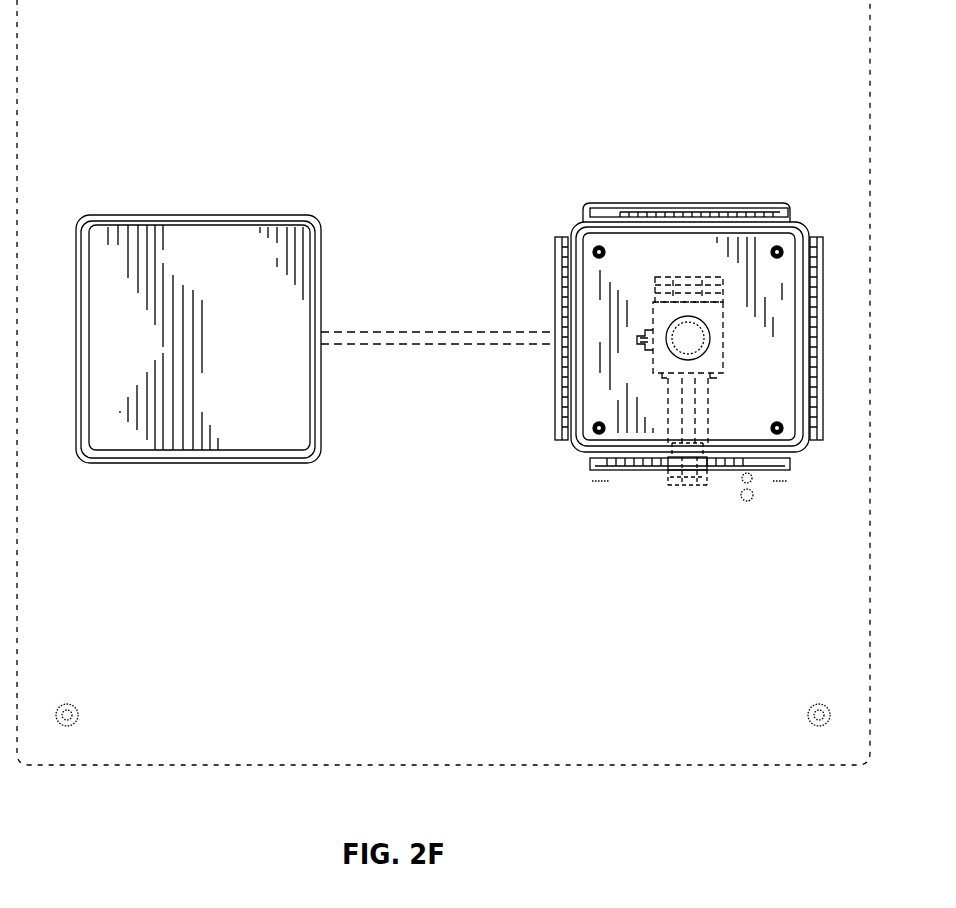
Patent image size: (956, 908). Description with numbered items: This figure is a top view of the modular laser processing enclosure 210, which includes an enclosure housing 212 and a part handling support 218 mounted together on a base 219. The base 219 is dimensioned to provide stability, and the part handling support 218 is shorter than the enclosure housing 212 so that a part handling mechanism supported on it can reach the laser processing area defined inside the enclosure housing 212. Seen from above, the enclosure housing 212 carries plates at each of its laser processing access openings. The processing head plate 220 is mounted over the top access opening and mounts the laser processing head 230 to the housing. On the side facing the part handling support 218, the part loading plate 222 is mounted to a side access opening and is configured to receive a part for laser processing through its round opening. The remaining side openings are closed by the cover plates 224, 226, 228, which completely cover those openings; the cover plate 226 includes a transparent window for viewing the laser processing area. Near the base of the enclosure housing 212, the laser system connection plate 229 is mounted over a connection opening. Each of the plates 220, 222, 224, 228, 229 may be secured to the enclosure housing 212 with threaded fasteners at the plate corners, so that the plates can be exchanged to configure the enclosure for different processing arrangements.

The modular laser processing enclosure 210 is at (460, 505).
The enclosure housing 212 is at (568, 220).
The part handling support 218 is at (279, 350).
The base 219 is at (535, 719).
The processing head plate 220 is at (765, 405).
The part loading plate 222 is at (556, 360).
The cover plate 224 is at (655, 477).
The cover plate 226 is at (722, 202).
The cover plate 228 is at (822, 373).
The laser system connection plate 229 is at (733, 472).
The laser processing head 230 is at (651, 352).